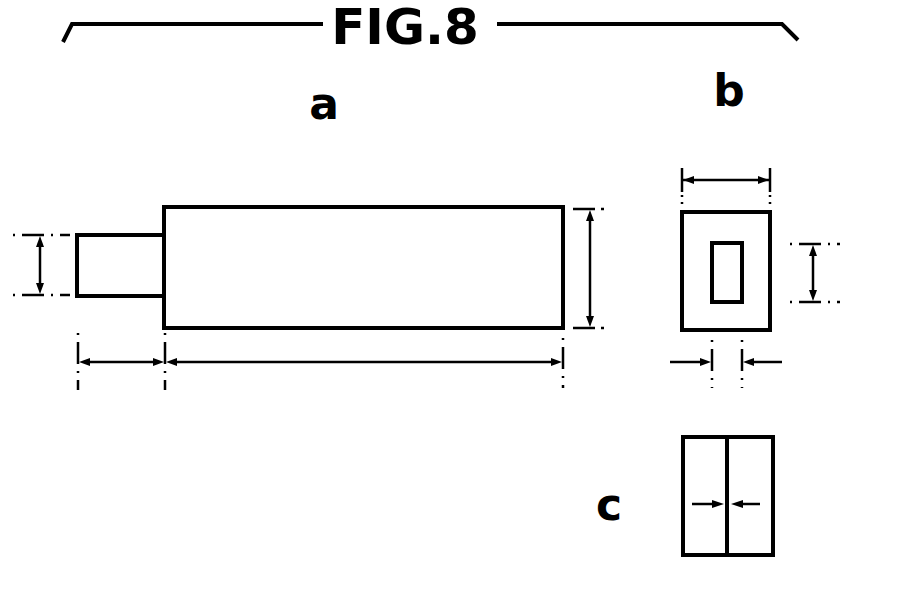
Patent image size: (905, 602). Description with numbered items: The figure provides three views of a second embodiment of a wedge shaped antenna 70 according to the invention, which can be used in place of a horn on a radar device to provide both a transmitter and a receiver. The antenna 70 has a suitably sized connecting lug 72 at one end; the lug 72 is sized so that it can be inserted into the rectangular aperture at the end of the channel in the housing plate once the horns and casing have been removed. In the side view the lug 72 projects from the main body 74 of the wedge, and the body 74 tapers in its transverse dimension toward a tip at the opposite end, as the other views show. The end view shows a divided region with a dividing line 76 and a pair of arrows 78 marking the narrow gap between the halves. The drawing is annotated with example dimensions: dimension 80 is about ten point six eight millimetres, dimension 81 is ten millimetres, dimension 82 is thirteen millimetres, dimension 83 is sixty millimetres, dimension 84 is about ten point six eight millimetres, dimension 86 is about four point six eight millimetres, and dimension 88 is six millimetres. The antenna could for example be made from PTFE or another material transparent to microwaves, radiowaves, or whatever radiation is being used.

The wedge shaped antenna 70 is at (222, 468).
The connecting lug 72 is at (114, 256).
The main body 74 is at (382, 277).
The dividing line / gap 76 is at (727, 538).
The gap width arrows 78 is at (735, 494).
The dimension 80 is at (52, 260).
The dimension 81 is at (122, 366).
The dimension 82 is at (598, 250).
The dimension 83 is at (320, 368).
The dimension 84 is at (830, 272).
The dimension 86 is at (722, 378).
The dimension 88 is at (727, 180).